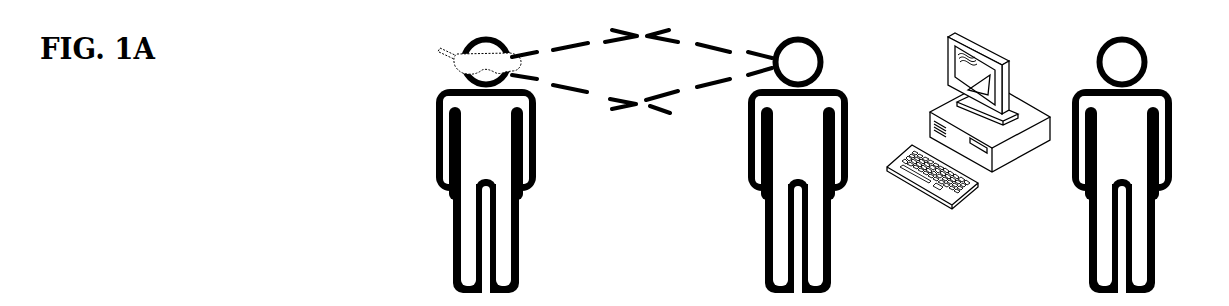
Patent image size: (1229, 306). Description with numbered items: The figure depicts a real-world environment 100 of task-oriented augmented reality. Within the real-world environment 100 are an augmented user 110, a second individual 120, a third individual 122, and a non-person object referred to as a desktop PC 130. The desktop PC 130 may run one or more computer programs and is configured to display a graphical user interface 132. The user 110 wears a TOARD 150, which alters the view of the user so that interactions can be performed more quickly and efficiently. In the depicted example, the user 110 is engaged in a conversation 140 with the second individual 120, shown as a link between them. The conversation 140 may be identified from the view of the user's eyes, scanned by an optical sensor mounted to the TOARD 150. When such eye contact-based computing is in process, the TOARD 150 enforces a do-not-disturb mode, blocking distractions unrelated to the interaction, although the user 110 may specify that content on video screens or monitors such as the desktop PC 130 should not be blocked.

The real-world environment 100 is at (146, 159).
The augmented user 110 is at (465, 147).
The second individual 120 is at (778, 140).
The third individual 122 is at (1103, 147).
The desktop PC 130 is at (957, 151).
The graphical user interface 132 is at (960, 78).
The conversation 140 is at (641, 142).
The TOARD 150 is at (424, 65).